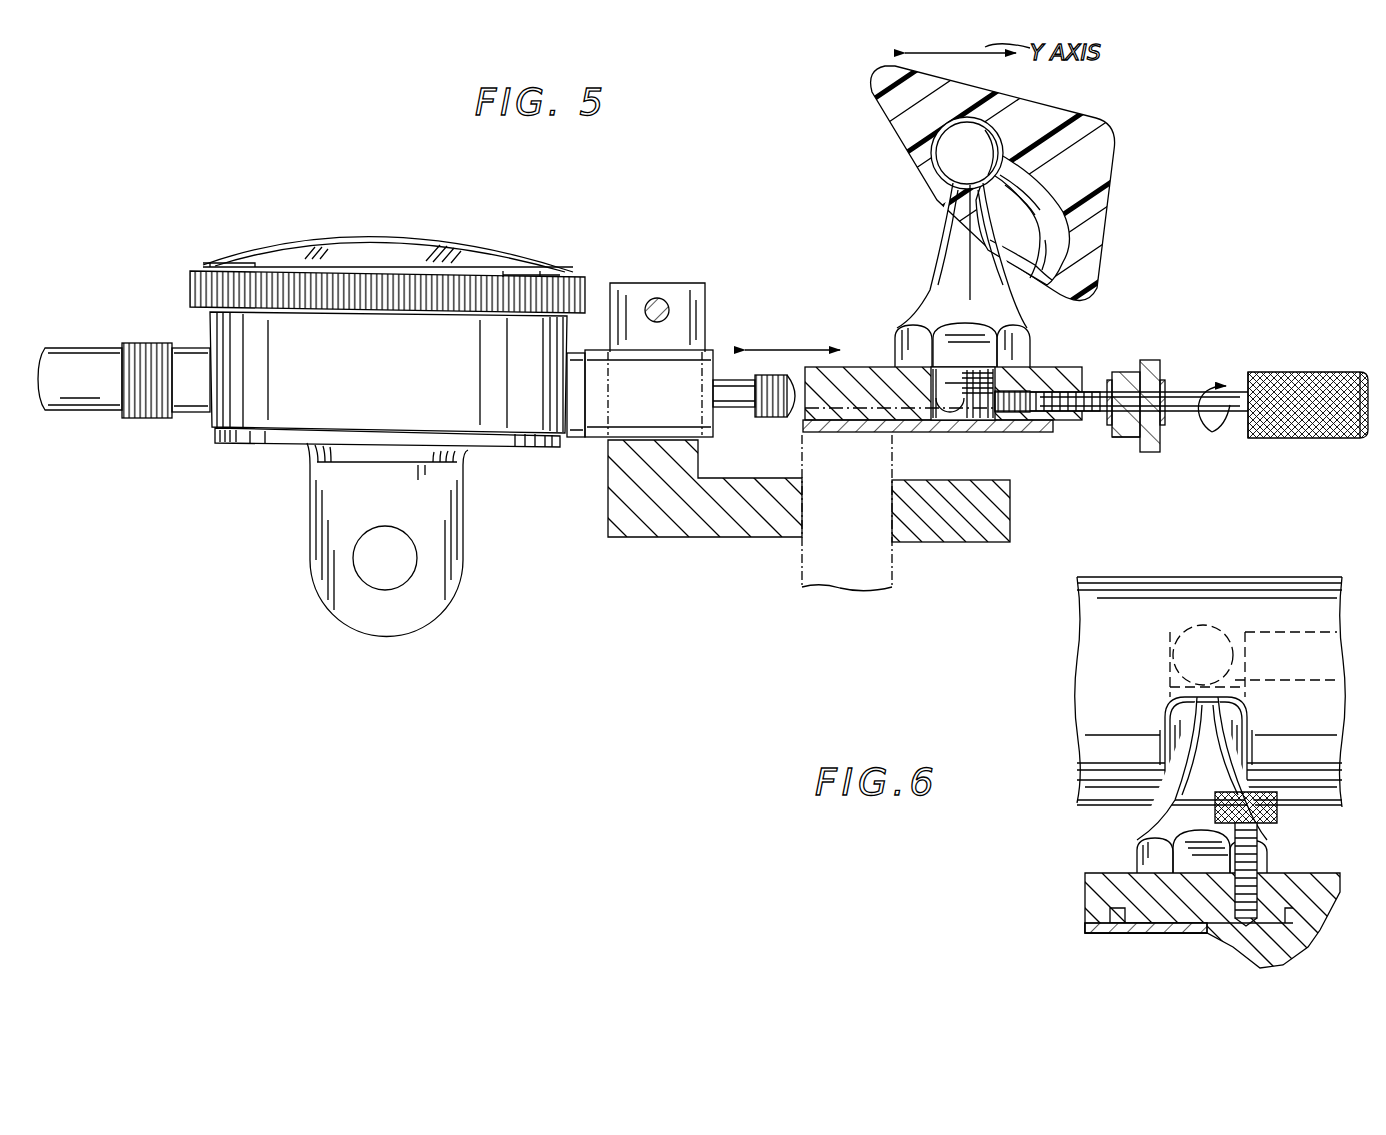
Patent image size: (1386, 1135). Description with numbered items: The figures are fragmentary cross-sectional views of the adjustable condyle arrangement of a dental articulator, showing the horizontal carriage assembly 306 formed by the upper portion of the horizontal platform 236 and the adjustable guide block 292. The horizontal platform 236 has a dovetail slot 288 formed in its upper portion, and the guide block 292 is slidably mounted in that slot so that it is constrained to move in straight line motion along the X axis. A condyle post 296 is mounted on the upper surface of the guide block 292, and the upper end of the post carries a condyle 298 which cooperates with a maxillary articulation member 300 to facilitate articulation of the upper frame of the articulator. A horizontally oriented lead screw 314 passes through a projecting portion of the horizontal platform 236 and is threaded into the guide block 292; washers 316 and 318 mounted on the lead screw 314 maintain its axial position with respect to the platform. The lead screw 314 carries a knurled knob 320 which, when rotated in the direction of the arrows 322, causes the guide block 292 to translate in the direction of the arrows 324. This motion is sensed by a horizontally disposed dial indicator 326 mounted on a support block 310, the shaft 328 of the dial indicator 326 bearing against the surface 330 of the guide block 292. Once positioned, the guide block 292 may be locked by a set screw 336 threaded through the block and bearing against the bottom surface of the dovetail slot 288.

In FIG. 5, the horizontal platform 236 is at (1128, 436).
In FIG. 6, the dovetail slot 288 is at (1150, 923).
In FIG. 5, the adjustable guide block 292 is at (1043, 372).
In FIG. 6, the adjustable guide block 292 is at (1147, 883).
In FIG. 5, the condyle post 296 is at (940, 312).
In FIG. 6, the condyle post 296 is at (1177, 813).
In FIG. 5, the condyle 298 is at (955, 165).
In FIG. 6, the condyle 298 is at (1190, 647).
In FIG. 5, the maxillary articulation member 300 is at (1103, 155).
In FIG. 6, the maxillary articulation member 300 is at (1087, 650).
In FIG. 5, the horizontal carriage assembly 306 is at (584, 537).
In FIG. 5, the support block 310 is at (688, 290).
In FIG. 5, the horizontal lead screw 314 is at (1240, 400).
In FIG. 5, the washer 316 is at (1110, 383).
In FIG. 5, the washer 318 is at (1165, 382).
In FIG. 5, the knurled knob 320 is at (1302, 440).
In FIG. 5, the arrows 322 is at (1211, 433).
In FIG. 5, the arrows 324 is at (797, 330).
In FIG. 5, the dial indicator 326 is at (540, 242).
In FIG. 5, the shaft 328 is at (732, 408).
In FIG. 5, the surface 330 is at (800, 419).
In FIG. 6, the set screw 336 is at (1263, 832).